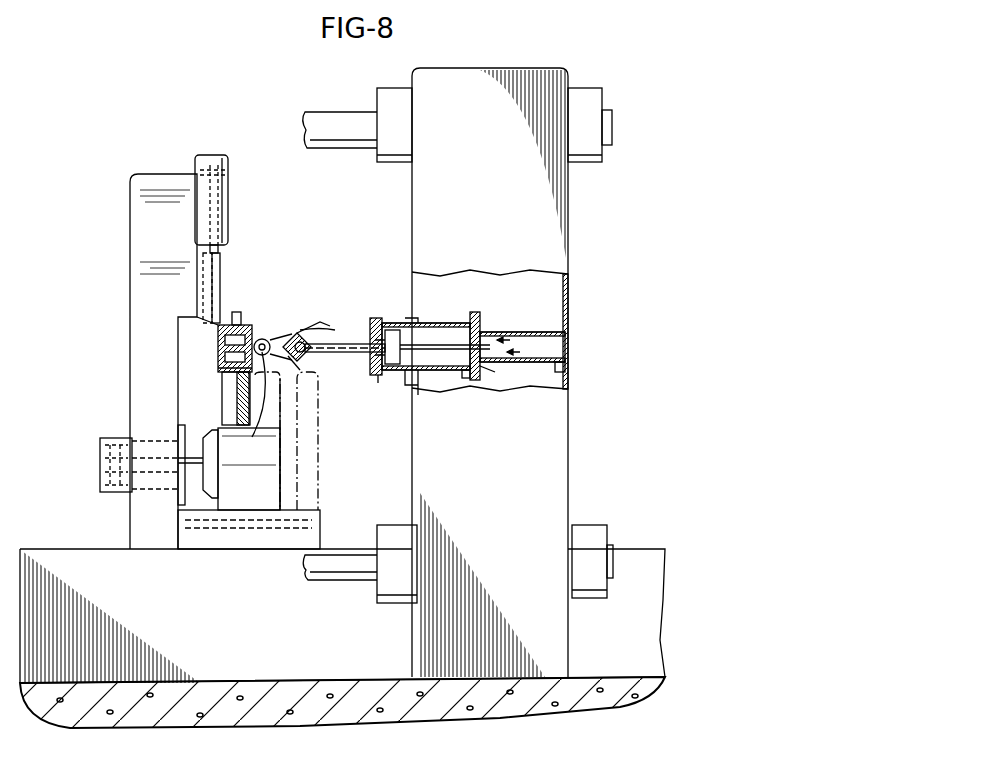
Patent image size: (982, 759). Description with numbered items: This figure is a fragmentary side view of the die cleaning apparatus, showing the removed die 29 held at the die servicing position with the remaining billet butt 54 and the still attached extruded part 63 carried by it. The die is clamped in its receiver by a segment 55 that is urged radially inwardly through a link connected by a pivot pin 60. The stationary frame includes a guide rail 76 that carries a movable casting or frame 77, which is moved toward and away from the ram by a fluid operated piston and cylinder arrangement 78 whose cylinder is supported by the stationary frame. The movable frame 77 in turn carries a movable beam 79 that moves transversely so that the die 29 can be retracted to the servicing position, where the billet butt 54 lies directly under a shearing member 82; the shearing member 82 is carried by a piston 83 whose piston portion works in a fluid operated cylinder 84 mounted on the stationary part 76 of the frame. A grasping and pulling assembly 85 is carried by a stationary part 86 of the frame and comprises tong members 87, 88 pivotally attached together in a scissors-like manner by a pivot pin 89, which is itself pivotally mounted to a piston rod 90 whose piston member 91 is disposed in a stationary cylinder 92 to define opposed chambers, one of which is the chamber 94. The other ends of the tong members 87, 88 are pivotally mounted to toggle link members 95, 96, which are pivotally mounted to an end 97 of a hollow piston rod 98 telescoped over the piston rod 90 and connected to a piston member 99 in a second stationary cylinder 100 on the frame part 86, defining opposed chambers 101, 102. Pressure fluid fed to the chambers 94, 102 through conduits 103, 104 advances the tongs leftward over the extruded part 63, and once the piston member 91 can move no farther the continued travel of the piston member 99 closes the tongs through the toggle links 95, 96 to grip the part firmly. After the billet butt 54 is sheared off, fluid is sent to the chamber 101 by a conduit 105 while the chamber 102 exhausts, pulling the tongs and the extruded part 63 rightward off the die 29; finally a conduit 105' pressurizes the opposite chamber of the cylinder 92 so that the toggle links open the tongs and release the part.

The die 29 is at (218, 373).
The billet butt 54 is at (218, 351).
The segment 55 is at (241, 318).
The pivot pin 60 is at (232, 319).
The extruded part 63 is at (262, 339).
The guide rail 76 is at (155, 562).
The movable frame 77 is at (270, 455).
The fluid operated piston and cylinder arrangement 78 is at (85, 452).
The movable beam 79 is at (236, 403).
The shearing member 82 is at (221, 270).
The piston 83 is at (217, 249).
The fluid operated cylinder 84 is at (228, 196).
The grasping and pulling assembly 85 is at (320, 298).
The stationary part of the frame 86 is at (416, 203).
The tong member 87 is at (278, 338).
The tong member 88 is at (249, 431).
The pivot pin 89 is at (305, 328).
The piston rod 90 is at (308, 342).
The piston member 91 is at (487, 340).
The stationary cylinder 92 is at (537, 333).
The chamber 94 is at (566, 346).
The link member 95 is at (312, 350).
The link member 96 is at (302, 368).
The end of hollow piston rod 97 is at (312, 360).
The hollow piston rod 98 is at (375, 318).
The piston member 99 is at (393, 330).
The stationary cylinder 100 is at (440, 378).
The chamber 101 is at (388, 372).
The chamber 102 is at (456, 372).
The conduit 103 is at (568, 369).
The conduit 104 is at (466, 372).
The conduit 105 is at (389, 431).
The conduit 105' is at (559, 395).